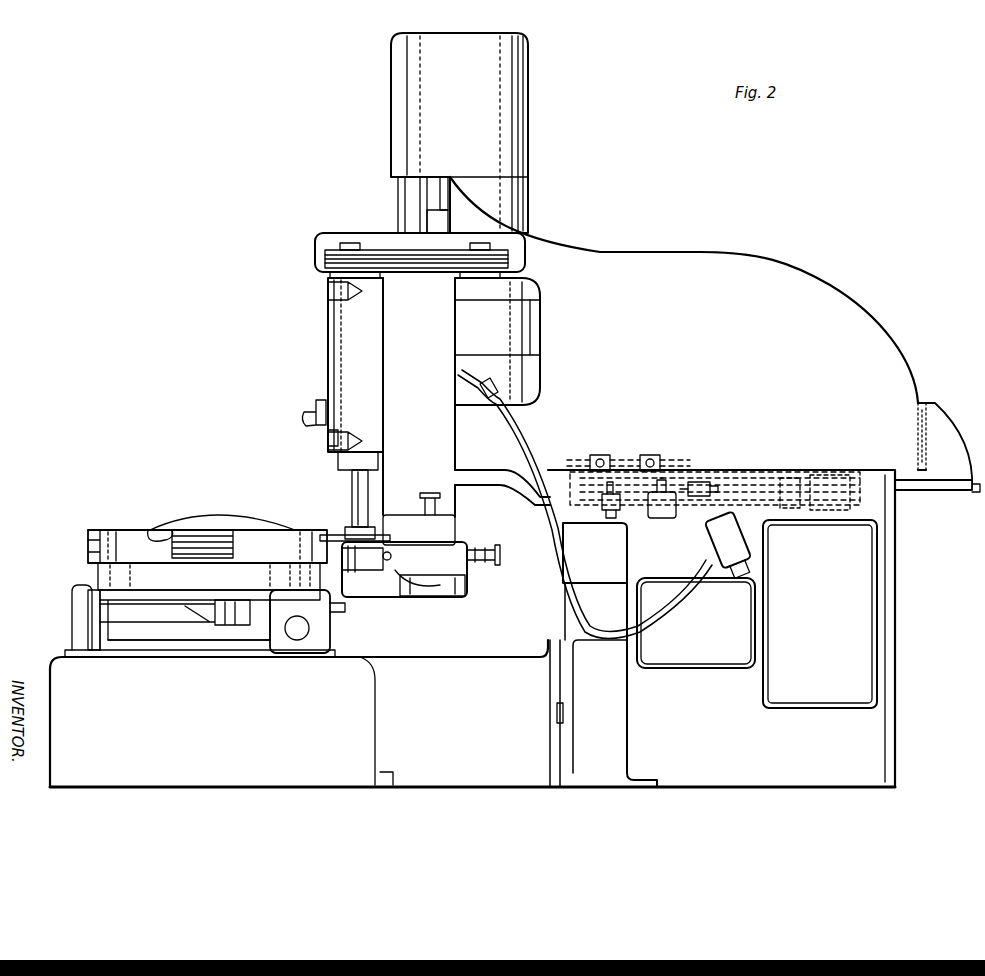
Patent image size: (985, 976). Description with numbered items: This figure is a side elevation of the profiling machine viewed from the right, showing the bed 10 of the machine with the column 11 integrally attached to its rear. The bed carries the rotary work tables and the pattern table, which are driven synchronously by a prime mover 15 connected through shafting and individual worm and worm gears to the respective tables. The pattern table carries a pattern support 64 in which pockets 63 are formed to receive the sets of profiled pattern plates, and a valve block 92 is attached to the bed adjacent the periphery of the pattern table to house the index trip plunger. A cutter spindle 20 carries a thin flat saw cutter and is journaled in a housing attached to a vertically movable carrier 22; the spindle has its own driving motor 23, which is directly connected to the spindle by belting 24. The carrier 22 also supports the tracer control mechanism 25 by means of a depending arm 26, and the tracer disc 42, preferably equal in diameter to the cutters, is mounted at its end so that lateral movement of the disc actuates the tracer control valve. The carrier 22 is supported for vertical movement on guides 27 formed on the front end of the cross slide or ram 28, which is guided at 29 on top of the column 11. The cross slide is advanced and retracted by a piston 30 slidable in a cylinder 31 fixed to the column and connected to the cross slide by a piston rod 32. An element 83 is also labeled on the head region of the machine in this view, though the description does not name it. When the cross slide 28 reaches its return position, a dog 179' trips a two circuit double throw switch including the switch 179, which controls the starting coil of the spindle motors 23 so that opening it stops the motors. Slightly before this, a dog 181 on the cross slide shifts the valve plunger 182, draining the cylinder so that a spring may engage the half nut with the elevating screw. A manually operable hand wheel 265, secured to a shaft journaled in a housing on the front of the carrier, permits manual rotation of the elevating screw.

The bed 10 is at (60, 660).
The column 11 is at (886, 606).
The prime mover 15 is at (325, 640).
The cutter spindle 20 is at (354, 480).
The carrier 22 is at (430, 218).
The driving motor 23 is at (516, 327).
The belting 24 is at (390, 263).
The tracer control mechanism 25 is at (410, 570).
The depending arm 26 is at (459, 133).
The guides 27 is at (446, 188).
The cross slide 28 is at (825, 281).
The guide 29 is at (500, 487).
The piston 30 is at (698, 476).
The cylinder 31 is at (772, 474).
The piston rod 32 is at (951, 492).
The tracer disc 42 is at (345, 540).
The pocket 63 is at (152, 525).
The pattern support 64 is at (130, 531).
The guide rod 83 is at (404, 187).
The valve block 92 is at (86, 590).
The switch 179 is at (670, 508).
The dog 179' is at (665, 449).
The dog 181 is at (600, 455).
The valve plunger 182 is at (620, 510).
The hand wheel 265 is at (324, 410).